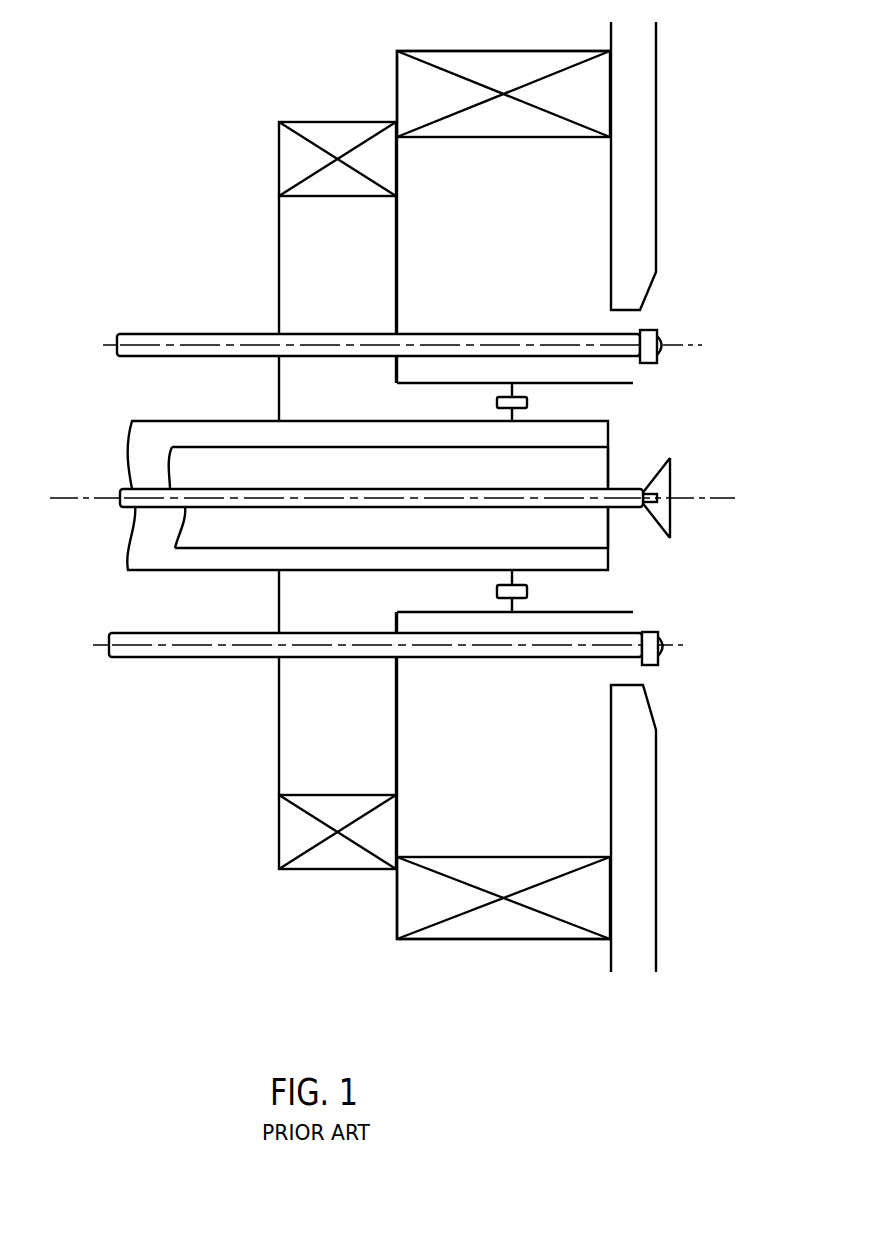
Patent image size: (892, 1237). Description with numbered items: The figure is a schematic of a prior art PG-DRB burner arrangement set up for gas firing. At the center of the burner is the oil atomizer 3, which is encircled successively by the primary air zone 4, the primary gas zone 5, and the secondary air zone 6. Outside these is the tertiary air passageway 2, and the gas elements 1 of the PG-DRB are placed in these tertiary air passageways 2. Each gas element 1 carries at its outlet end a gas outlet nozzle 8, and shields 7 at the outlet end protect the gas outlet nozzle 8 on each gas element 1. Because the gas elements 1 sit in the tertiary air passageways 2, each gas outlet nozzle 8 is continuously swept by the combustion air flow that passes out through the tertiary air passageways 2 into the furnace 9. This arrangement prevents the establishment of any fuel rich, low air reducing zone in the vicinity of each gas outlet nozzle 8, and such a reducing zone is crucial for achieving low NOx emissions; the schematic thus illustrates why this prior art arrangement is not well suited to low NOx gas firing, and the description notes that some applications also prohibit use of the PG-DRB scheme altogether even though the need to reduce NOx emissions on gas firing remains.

The gas element 1 is at (432, 340).
The tertiary air passageway 2 is at (506, 213).
The oil atomizer 3 is at (422, 492).
The primary air zone 4 is at (344, 538).
The primary gas zone 5 is at (210, 558).
The secondary air zone 6 is at (414, 413).
The shield 7 is at (648, 331).
The gas outlet nozzle 8 is at (660, 352).
The furnace 9 is at (756, 478).